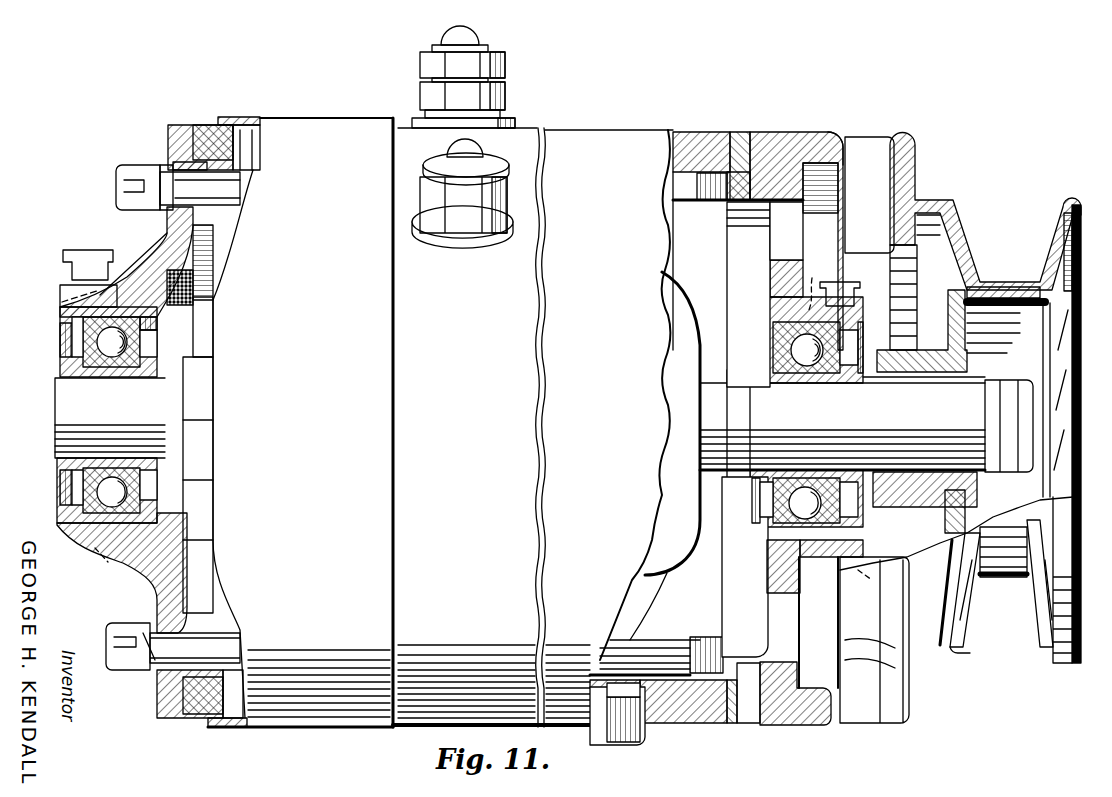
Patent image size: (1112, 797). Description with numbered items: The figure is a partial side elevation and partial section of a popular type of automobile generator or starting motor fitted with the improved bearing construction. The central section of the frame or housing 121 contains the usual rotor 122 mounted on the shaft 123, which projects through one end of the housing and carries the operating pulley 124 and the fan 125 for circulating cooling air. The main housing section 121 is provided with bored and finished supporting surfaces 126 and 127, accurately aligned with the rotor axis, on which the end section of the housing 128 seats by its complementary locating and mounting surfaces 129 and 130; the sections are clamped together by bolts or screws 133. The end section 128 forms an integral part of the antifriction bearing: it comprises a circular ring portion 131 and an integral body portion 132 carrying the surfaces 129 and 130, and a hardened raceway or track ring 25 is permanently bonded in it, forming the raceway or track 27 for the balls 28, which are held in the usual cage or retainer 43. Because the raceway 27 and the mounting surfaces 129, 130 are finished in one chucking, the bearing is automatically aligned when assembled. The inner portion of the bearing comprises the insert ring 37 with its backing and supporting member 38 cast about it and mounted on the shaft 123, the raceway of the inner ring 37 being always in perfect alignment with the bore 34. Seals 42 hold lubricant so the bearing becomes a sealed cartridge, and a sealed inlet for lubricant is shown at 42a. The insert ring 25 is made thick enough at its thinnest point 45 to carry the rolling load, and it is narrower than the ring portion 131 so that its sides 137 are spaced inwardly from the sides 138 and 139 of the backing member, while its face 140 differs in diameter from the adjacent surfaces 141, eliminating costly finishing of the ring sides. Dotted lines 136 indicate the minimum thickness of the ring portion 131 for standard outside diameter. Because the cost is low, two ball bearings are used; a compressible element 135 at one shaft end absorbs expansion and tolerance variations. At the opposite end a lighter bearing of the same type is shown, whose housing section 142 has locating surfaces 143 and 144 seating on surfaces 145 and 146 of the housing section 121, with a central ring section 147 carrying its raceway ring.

The raceway or track ring 25 is at (205, 315).
The raceway or track 27 is at (90, 379).
The balls 28 is at (118, 378).
The inner race 34 is at (812, 385).
The insert ring 37 is at (82, 367).
The backing and supporting member 38 is at (152, 378).
The seals 42 is at (80, 336).
The sealed inlet for lubricant 42a is at (95, 262).
The cage or retainer 43 is at (782, 504).
The thinnest point 45 is at (830, 485).
The central section of the frame or housing 121 is at (242, 121).
The rotor 122 is at (662, 364).
The shaft 123 is at (707, 423).
The operating pulley 124 is at (955, 645).
The fan 125 is at (878, 720).
The supporting surface 126 is at (738, 205).
The supporting surface 127 is at (796, 113).
The end section of the housing 128 is at (822, 140).
The locating and mounting surface 129 is at (740, 150).
The locating and mounting surface 130 is at (752, 168).
The circular ring portion 131 is at (70, 530).
The body portion 132 is at (770, 578).
The bolts or screws 133 is at (243, 200).
The compressible element 135 is at (176, 401).
The dotted lines 136 is at (60, 290).
The sides of the insert ring 137 is at (66, 345).
The side of the backing member 138 is at (755, 325).
The side of the backing member 139 is at (900, 316).
The face of the insert ring 140 is at (78, 356).
The adjacent surfaces of the backing ring member 141 is at (62, 336).
The housing section 142 is at (168, 145).
The locating and mounting surface 143 is at (200, 125).
The locating and mounting surface 144 is at (246, 153).
The surface 145 is at (180, 125).
The surface 146 is at (205, 172).
The central ring section 147 is at (85, 556).